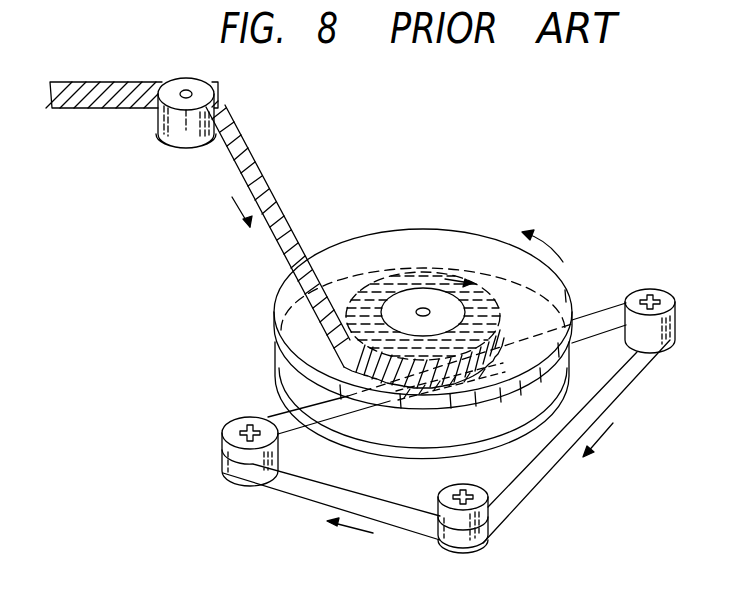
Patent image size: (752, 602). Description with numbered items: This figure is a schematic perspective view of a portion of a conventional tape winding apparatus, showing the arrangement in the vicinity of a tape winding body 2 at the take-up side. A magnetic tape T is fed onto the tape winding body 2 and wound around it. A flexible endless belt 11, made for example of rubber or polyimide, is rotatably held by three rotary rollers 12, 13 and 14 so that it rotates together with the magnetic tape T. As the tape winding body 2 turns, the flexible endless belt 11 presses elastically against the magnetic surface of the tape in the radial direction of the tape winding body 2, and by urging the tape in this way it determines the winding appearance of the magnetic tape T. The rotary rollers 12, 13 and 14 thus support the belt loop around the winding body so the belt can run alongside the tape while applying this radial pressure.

The magnetic tape T is at (270, 190).
The tape winding body 2 is at (458, 248).
The flexible endless belt 11 is at (283, 420).
The rotary roller 12 is at (232, 430).
The rotary roller 13 is at (651, 292).
The rotary roller 14 is at (443, 492).